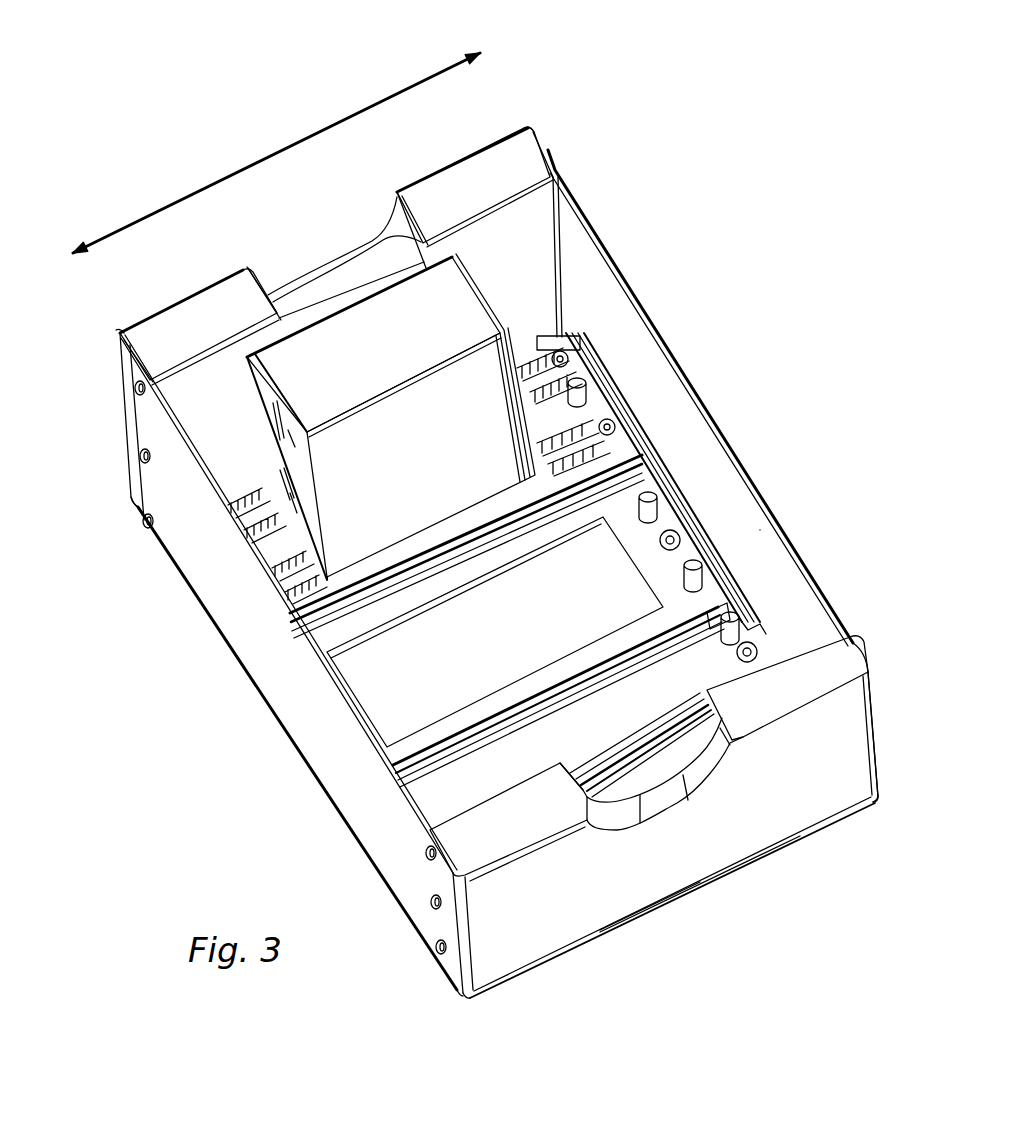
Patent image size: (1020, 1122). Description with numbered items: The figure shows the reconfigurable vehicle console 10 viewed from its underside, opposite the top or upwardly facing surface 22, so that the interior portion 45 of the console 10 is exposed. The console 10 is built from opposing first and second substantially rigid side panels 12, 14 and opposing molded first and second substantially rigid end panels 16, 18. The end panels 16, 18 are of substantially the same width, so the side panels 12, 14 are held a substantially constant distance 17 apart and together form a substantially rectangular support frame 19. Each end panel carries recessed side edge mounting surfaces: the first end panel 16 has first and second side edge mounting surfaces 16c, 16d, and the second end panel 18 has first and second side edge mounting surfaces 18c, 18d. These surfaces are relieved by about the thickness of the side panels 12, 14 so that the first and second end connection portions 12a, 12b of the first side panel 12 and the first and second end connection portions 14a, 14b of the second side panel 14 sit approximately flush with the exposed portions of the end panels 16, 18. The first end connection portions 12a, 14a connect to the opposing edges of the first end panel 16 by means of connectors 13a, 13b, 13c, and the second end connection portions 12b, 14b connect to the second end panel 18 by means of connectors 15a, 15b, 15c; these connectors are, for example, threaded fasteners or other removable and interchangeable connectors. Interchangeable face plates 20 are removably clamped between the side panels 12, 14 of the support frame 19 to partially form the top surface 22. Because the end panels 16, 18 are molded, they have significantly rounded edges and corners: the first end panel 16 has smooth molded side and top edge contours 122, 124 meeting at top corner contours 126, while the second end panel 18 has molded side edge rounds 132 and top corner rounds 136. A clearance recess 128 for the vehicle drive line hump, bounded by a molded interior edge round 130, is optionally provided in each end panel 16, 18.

The reconfigurable vehicle console 10 is at (689, 304).
The first side panel 12 is at (268, 677).
The first end connection portion of the first side panel 12a is at (453, 890).
The second end connection portion of the first side panel 12b is at (131, 368).
The connector 13a is at (435, 948).
The connector 13b is at (430, 903).
The connector 13c is at (425, 854).
The second side panel 14 is at (768, 508).
The first end connection portion of the second side panel 14a is at (812, 660).
The second end connection portion of the second side panel 14b is at (560, 167).
The connector 15a is at (142, 521).
The connector 15b is at (138, 457).
The connector 15c is at (134, 392).
The first end panel 16 is at (781, 834).
The first side edge mounting surface of the first end panel 16c is at (445, 845).
The second side edge mounting surface of the first end panel 16d is at (787, 688).
The distance between side panels 17 is at (375, 100).
The second end panel 18 is at (165, 300).
The first side edge mounting surface of the second end panel 18c is at (144, 362).
The second side edge mounting surface of the second end panel 18d is at (540, 160).
The rectangular support frame 19 is at (457, 162).
The face plate 20 is at (557, 426).
The top or upwardly facing surface 22 is at (672, 922).
The interior portion 45 is at (750, 537).
The molded side edge contour 122 is at (879, 736).
The molded top edge contour 124 is at (735, 888).
The top corner contour 126 is at (879, 806).
The clearance recess 128 is at (393, 210).
The molded interior edge round 130 is at (353, 251).
The molded side edge round 132 is at (530, 127).
The top corner round 136 is at (128, 497).